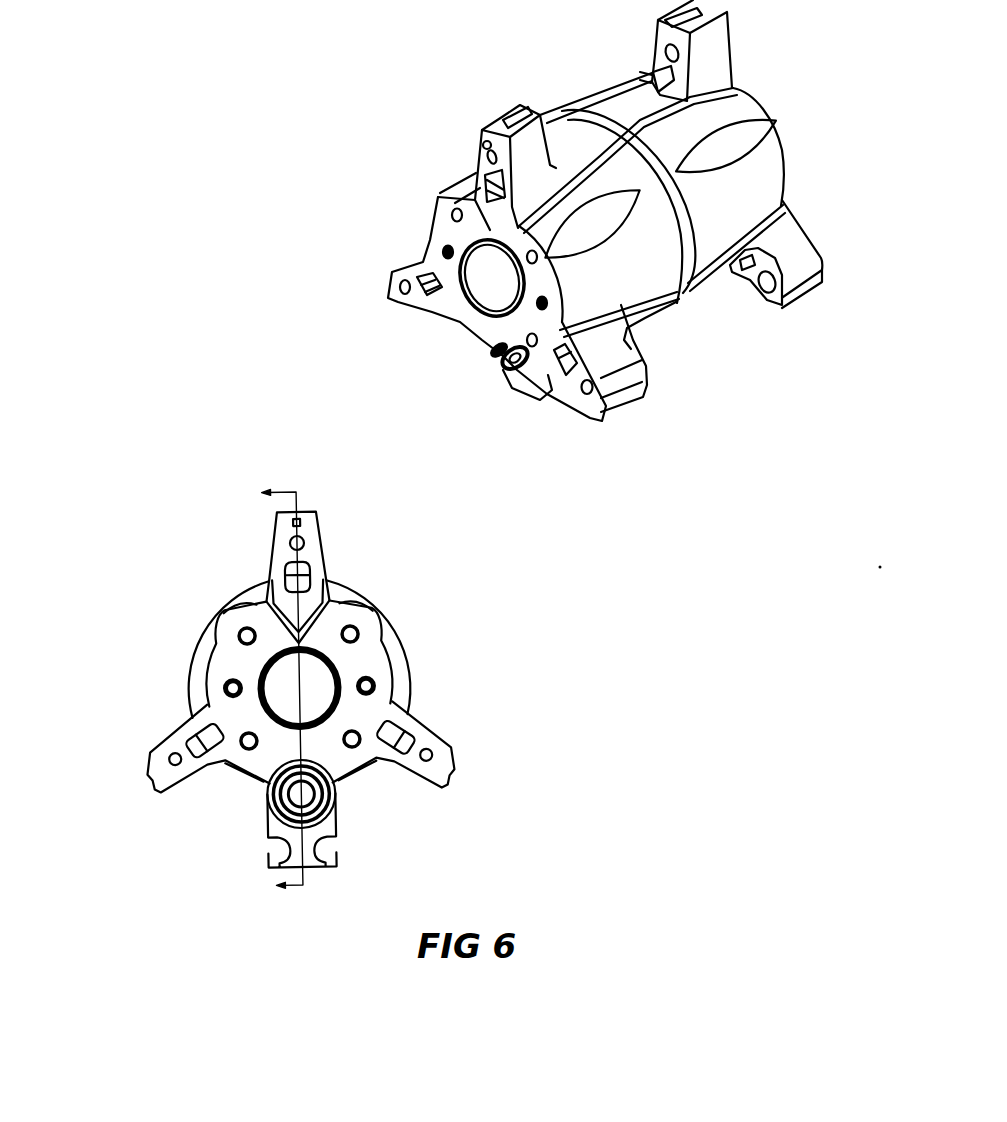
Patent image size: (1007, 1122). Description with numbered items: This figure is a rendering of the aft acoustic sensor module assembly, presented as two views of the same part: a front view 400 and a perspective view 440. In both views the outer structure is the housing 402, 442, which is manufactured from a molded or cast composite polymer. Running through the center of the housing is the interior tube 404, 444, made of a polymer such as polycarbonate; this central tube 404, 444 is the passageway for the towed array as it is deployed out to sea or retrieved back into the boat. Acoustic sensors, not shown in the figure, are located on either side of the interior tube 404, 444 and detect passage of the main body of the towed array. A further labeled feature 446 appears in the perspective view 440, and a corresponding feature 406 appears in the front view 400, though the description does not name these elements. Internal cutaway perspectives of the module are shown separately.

The perspective view 440 is at (404, 121).
The housing 442 is at (747, 185).
The interior tube 444 is at (431, 257).
The connector 446 is at (515, 359).
The front view 400 is at (176, 568).
The housing 402 is at (388, 641).
The interior tube 404 is at (345, 697).
The connector 406 is at (337, 808).